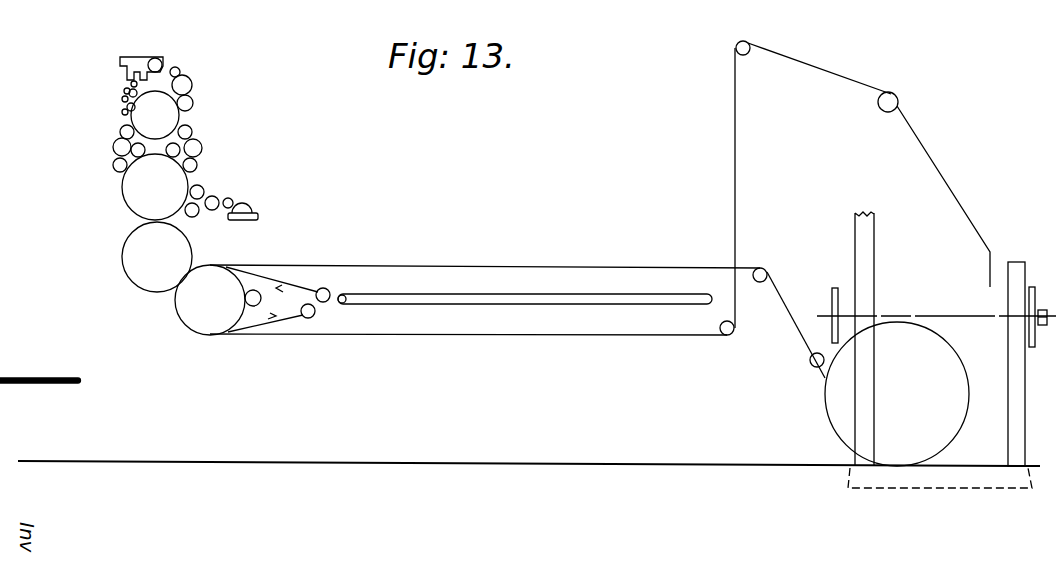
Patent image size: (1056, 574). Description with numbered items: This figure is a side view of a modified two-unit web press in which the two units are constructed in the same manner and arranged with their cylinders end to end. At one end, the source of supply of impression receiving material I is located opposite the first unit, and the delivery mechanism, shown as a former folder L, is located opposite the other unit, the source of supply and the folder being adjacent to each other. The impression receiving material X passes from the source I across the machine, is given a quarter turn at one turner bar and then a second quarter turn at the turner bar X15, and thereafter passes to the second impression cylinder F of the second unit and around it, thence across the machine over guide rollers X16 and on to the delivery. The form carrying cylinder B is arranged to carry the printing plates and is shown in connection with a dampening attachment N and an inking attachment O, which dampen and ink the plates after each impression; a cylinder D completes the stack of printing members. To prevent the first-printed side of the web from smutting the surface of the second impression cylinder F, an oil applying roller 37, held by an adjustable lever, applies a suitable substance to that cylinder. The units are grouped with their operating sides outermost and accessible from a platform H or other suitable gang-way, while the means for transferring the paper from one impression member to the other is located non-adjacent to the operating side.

The inking attachment O is at (163, 116).
The form carrying cylinder B is at (133, 193).
The dampening attachment N is at (249, 194).
The cylinder D is at (135, 272).
The second impression cylinder F is at (190, 317).
The oil applying roller 37 is at (254, 297).
The impression receiving material X is at (447, 263).
The turner bar X15 is at (538, 300).
The guide pulleys X16 is at (753, 43).
The former folder L is at (952, 185).
The source of supply of impression receiving material I is at (943, 368).
The platform H is at (53, 377).